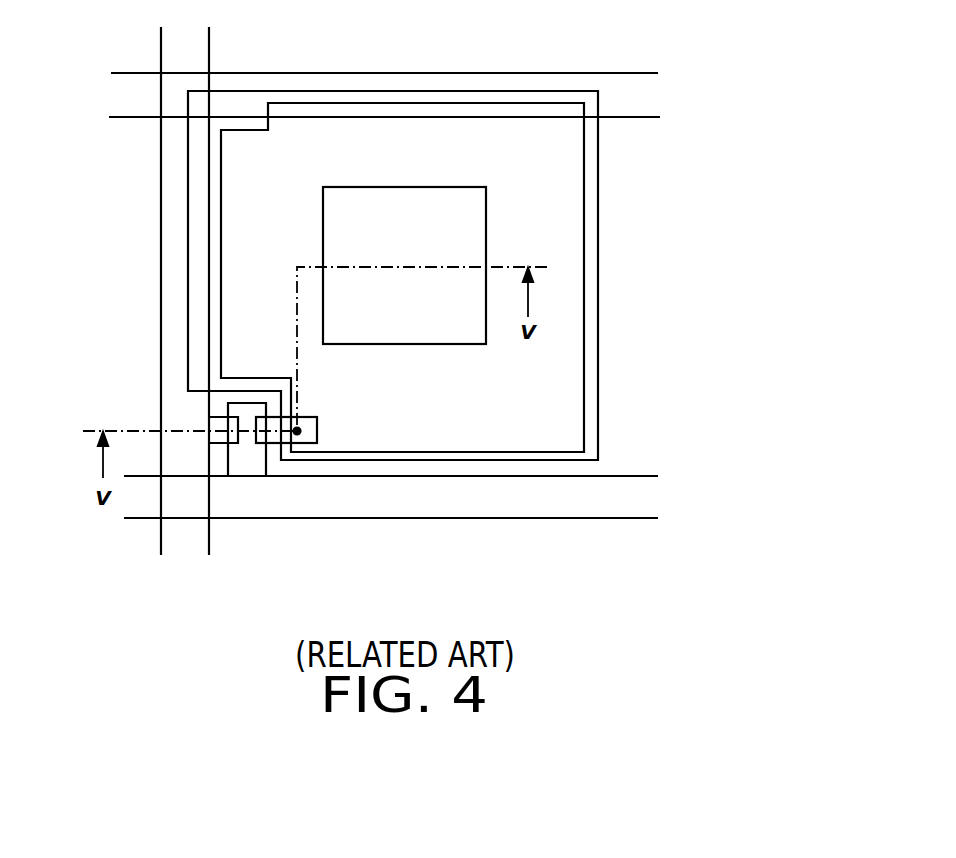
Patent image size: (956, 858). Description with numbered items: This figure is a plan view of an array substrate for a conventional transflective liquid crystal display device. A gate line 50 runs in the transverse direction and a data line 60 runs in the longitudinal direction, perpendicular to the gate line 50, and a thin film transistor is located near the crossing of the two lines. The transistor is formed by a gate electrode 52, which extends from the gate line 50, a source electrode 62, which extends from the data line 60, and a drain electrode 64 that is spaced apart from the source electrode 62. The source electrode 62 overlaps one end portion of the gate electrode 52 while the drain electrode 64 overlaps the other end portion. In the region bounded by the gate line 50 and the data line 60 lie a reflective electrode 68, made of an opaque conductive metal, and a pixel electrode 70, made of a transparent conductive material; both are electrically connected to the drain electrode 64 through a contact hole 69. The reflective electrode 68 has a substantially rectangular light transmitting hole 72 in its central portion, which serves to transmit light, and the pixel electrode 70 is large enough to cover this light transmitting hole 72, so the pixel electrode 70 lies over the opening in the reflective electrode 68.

The gate line 50 is at (488, 505).
The gate electrode 52 is at (246, 464).
The data line 60 is at (173, 50).
The source electrode 62 is at (217, 425).
The drain electrode 64 is at (310, 440).
The reflective electrode 68 is at (599, 395).
The contact hole 69 is at (298, 437).
The pixel electrode 70 is at (585, 323).
The light transmitting hole 72 is at (406, 217).